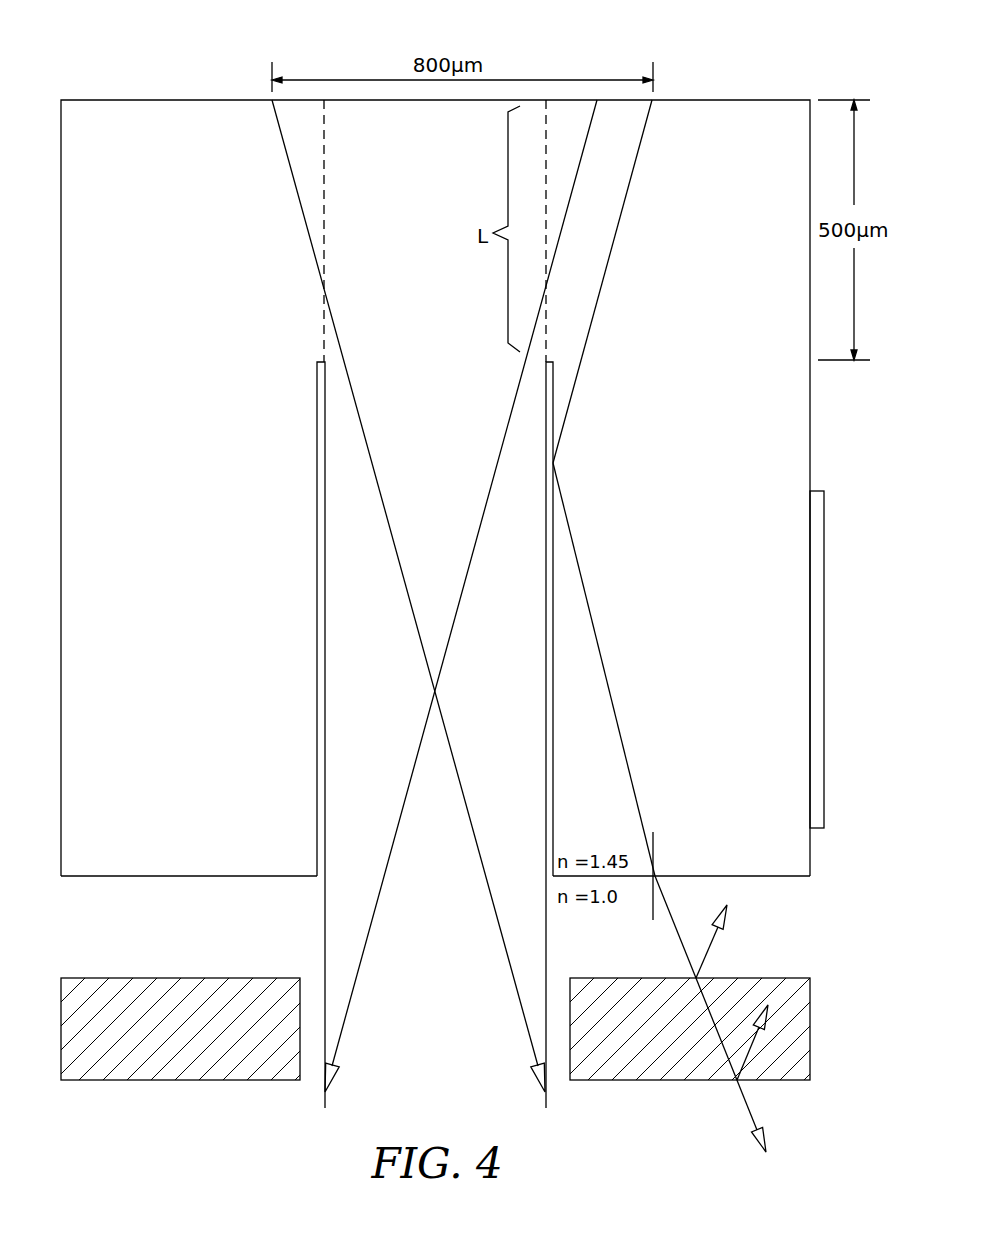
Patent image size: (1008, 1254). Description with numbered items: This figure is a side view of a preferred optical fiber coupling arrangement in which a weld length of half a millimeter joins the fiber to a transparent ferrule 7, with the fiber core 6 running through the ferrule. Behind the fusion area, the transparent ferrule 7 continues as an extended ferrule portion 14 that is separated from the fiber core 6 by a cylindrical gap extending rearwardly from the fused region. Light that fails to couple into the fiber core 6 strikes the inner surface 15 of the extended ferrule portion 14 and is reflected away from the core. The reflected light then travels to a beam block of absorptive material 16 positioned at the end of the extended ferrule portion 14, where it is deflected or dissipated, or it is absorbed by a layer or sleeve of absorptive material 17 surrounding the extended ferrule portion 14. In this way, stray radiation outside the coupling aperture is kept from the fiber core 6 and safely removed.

The fiber core 6 is at (445, 840).
The transparent ferrule 7 is at (686, 65).
The extended ferrule portion 14 is at (676, 681).
The inner surface of the extended ferrule portion 15 is at (554, 564).
The beam block of absorptive material 16 is at (758, 978).
The sleeve of absorptive material 17 is at (826, 670).